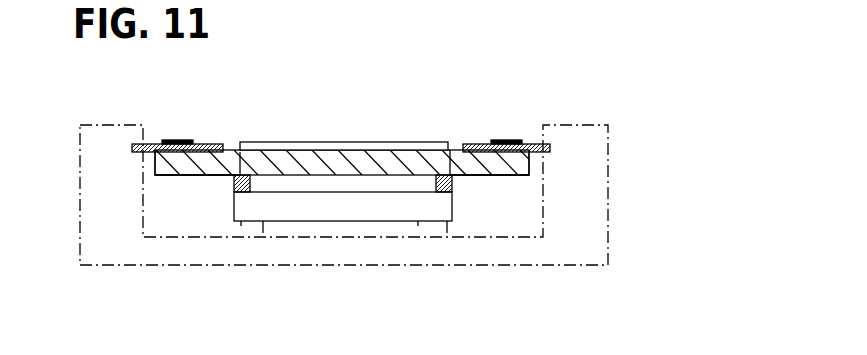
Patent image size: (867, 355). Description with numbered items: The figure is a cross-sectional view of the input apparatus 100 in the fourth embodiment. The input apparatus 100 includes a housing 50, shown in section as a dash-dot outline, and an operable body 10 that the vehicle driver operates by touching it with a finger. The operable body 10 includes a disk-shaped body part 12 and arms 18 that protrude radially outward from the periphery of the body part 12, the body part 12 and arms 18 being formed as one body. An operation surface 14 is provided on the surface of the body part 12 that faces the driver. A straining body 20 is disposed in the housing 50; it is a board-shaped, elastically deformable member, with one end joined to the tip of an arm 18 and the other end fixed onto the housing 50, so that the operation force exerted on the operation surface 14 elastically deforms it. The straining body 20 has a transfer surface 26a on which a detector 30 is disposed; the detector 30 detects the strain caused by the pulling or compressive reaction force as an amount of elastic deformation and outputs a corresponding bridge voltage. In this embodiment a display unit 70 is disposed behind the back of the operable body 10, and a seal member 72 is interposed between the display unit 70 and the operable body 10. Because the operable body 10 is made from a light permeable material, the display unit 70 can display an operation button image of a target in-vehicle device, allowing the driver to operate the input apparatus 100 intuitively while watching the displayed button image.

The operable body 10 is at (350, 170).
The body part 12 is at (368, 157).
The operation surface 14 is at (275, 143).
The arm 18 is at (185, 175).
The straining body 20 is at (156, 144).
The transfer surface 26a is at (207, 145).
The detector 30 is at (178, 140).
The housing 50 is at (608, 166).
The display unit 70 is at (347, 221).
The seal member 72 is at (455, 183).
The input apparatus 100 is at (406, 169).